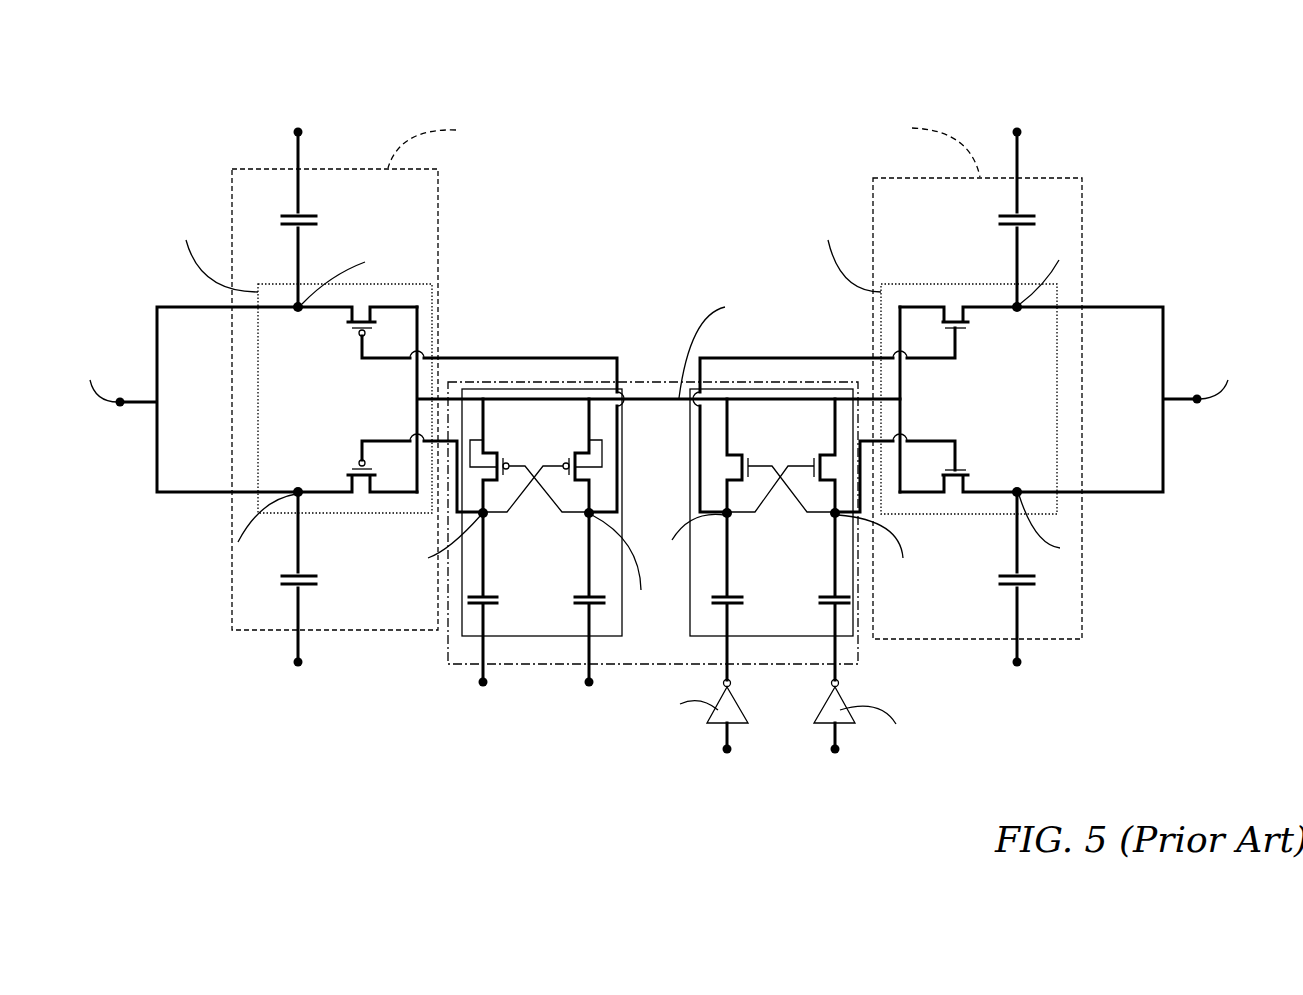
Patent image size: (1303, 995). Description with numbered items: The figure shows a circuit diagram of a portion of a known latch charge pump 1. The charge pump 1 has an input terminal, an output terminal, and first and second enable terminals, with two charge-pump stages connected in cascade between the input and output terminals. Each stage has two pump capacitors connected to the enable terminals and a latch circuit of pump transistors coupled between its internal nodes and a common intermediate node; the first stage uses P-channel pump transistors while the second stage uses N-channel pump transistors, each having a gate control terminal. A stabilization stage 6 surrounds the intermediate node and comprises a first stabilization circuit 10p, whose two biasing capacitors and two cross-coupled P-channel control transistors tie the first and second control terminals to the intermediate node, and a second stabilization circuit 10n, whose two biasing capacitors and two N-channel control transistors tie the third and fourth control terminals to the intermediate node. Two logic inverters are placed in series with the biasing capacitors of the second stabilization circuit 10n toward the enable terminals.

The latch charge pump 1 is at (726, 188).
The stabilization stage 6 is at (643, 380).
The first stabilization circuit 10p is at (447, 633).
The second stabilization circuit 10n is at (845, 640).